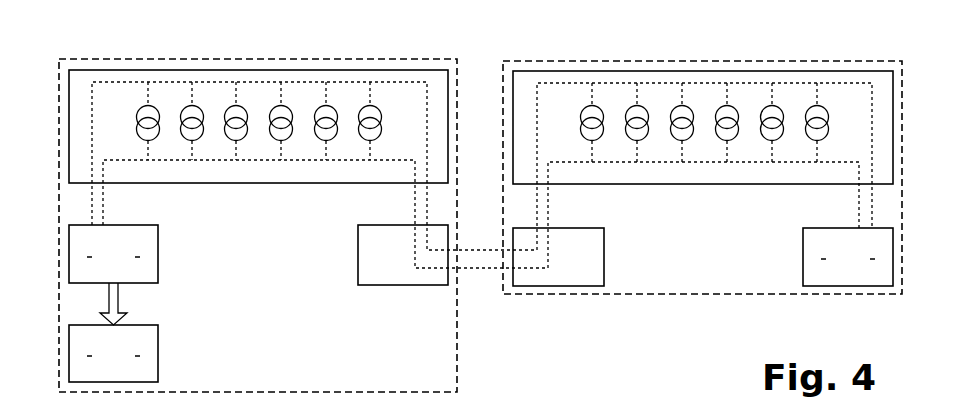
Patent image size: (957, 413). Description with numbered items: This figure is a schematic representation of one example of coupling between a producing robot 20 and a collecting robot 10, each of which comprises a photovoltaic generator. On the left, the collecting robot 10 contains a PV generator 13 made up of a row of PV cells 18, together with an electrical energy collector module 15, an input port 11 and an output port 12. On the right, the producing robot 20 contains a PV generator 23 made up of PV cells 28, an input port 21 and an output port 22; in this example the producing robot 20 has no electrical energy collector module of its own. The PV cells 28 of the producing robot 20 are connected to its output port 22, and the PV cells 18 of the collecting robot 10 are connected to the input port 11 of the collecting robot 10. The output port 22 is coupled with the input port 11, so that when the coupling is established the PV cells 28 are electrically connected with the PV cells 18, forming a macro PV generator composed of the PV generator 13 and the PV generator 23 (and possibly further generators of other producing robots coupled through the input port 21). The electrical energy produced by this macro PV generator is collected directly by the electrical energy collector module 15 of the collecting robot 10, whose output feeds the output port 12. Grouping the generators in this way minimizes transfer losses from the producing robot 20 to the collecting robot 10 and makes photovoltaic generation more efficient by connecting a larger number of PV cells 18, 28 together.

The collecting robot 10 is at (460, 349).
The input port 11 is at (402, 285).
The output port 12 is at (113, 353).
The PV generator 13 is at (262, 70).
The electrical energy collector module 15 is at (113, 254).
The PV cells 18 is at (135, 117).
The producing robot 20 is at (708, 305).
The input port 21 is at (848, 257).
The output port 22 is at (558, 286).
The PV generator 23 is at (705, 71).
The PV cells 28 is at (580, 117).